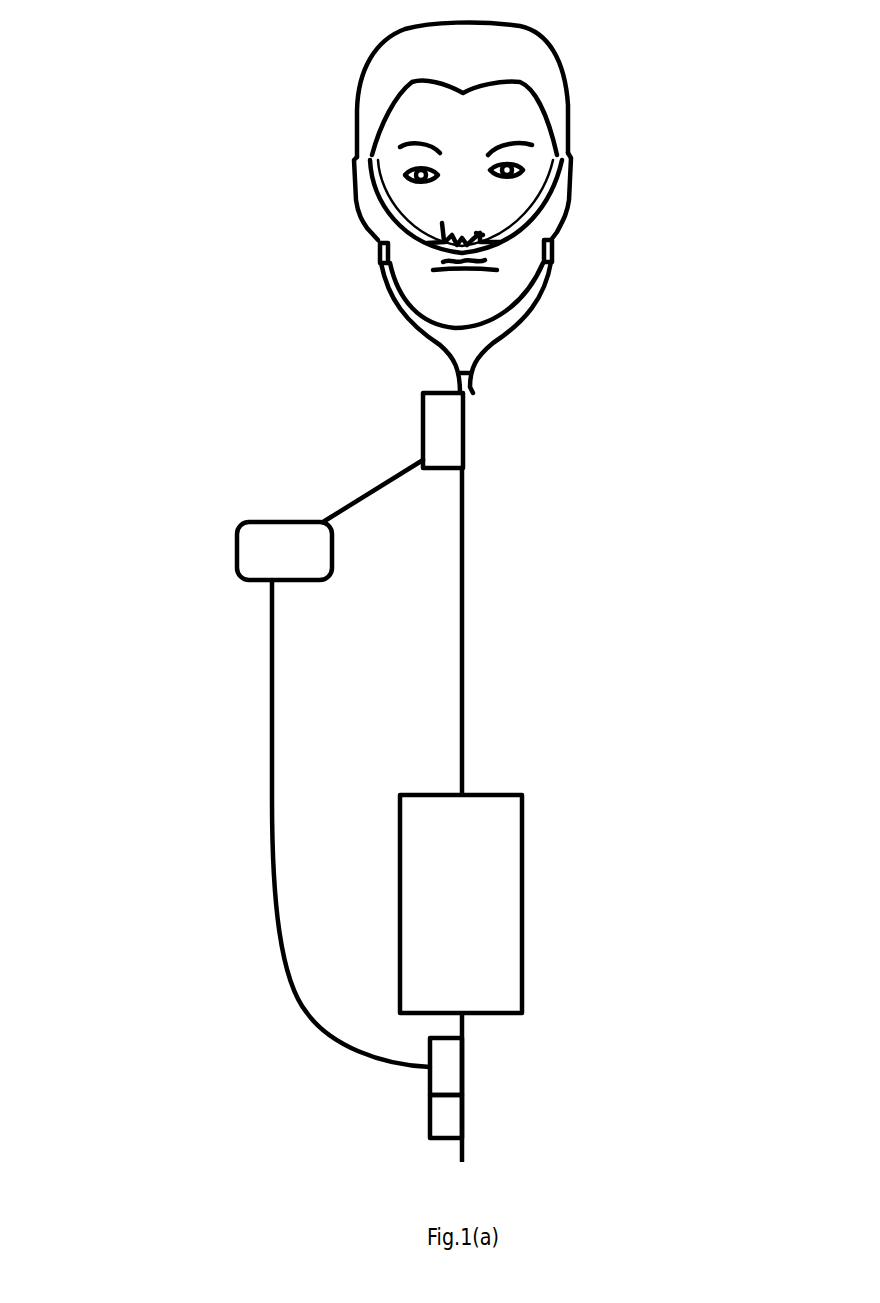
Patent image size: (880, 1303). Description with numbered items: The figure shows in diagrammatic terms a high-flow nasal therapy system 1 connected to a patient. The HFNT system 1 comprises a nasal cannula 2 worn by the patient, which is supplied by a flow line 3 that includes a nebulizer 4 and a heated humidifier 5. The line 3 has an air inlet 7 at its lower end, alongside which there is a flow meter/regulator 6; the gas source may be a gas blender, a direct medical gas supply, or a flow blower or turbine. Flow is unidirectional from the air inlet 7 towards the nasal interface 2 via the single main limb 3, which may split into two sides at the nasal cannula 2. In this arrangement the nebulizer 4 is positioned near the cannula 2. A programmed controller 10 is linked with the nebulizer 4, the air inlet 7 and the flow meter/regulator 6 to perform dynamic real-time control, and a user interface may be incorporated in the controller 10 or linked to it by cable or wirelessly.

The HFNT system 1 is at (127, 323).
The nasal cannula 2 is at (387, 308).
The flow line 3 is at (477, 660).
The nebulizer 4 is at (457, 448).
The heated humidifier 5 is at (520, 858).
The flow meter/regulator 6 is at (465, 1077).
The air inlet 7 is at (465, 1120).
The programmed controller 10 is at (230, 562).